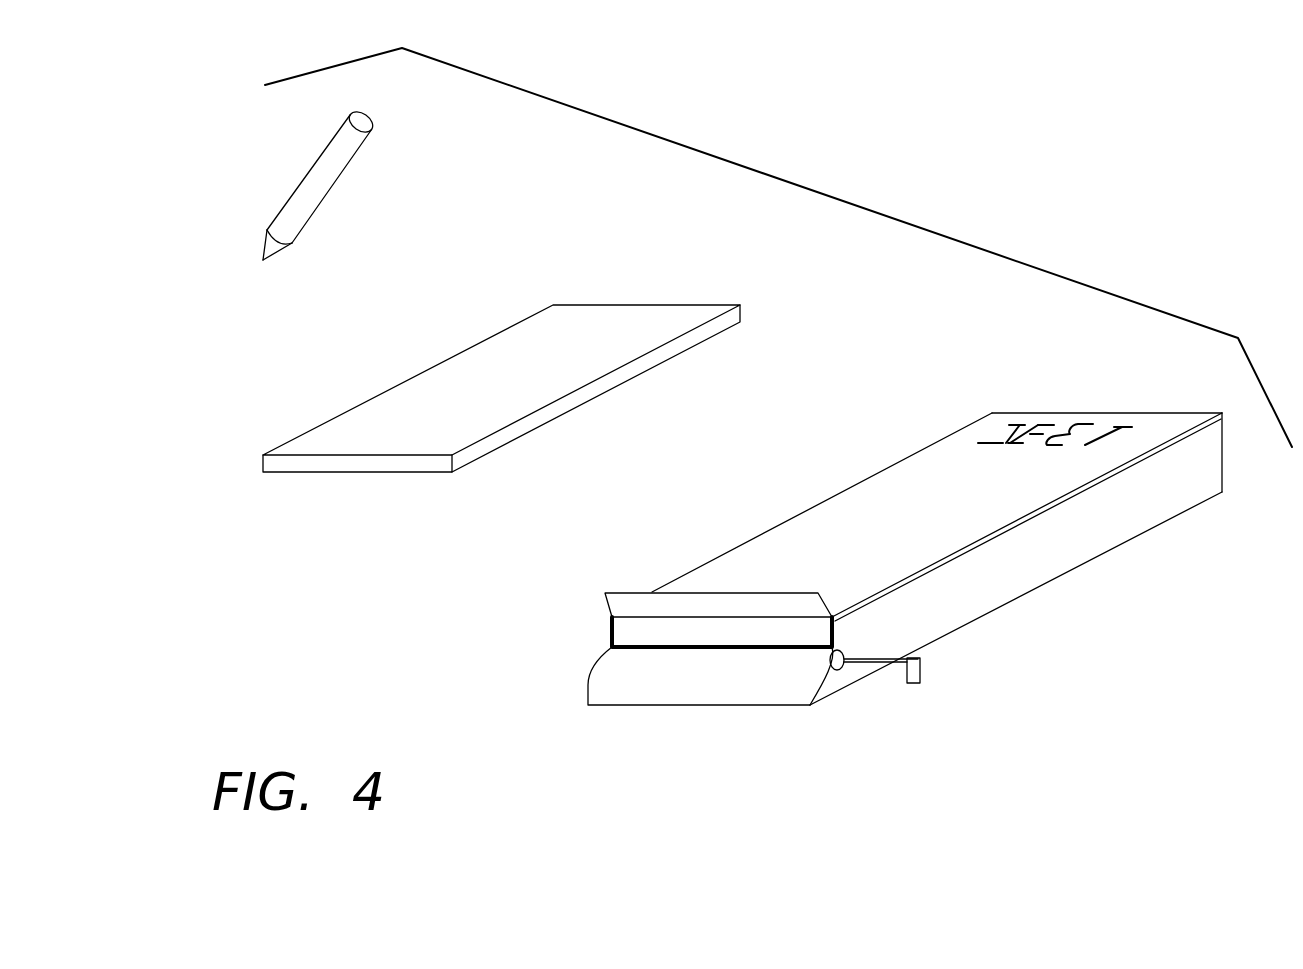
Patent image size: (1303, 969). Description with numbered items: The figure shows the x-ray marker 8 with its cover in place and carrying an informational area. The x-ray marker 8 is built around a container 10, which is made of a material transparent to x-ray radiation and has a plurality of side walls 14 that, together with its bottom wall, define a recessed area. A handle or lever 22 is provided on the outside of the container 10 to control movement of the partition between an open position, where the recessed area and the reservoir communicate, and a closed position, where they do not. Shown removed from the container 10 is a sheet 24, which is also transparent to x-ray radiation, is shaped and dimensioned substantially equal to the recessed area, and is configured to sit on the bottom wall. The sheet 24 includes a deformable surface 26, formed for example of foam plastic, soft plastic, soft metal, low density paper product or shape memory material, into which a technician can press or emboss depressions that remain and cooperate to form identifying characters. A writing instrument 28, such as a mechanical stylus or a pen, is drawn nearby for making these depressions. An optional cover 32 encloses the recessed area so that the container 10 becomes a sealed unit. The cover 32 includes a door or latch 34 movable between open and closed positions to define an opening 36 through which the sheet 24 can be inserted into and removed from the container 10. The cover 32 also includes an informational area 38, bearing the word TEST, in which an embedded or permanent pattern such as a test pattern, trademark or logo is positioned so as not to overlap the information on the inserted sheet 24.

The x-ray marker 8 is at (1020, 231).
The container 10 is at (886, 503).
The side walls 14 is at (877, 472).
The handle or lever 22 is at (922, 672).
The sheet 24 is at (501, 428).
The deformable surface 26 is at (458, 375).
The writing instrument 28 is at (325, 182).
The cover 32 is at (927, 477).
The door or latch 34 is at (640, 602).
The opening 36 is at (647, 635).
The informational area 38 is at (1003, 433).